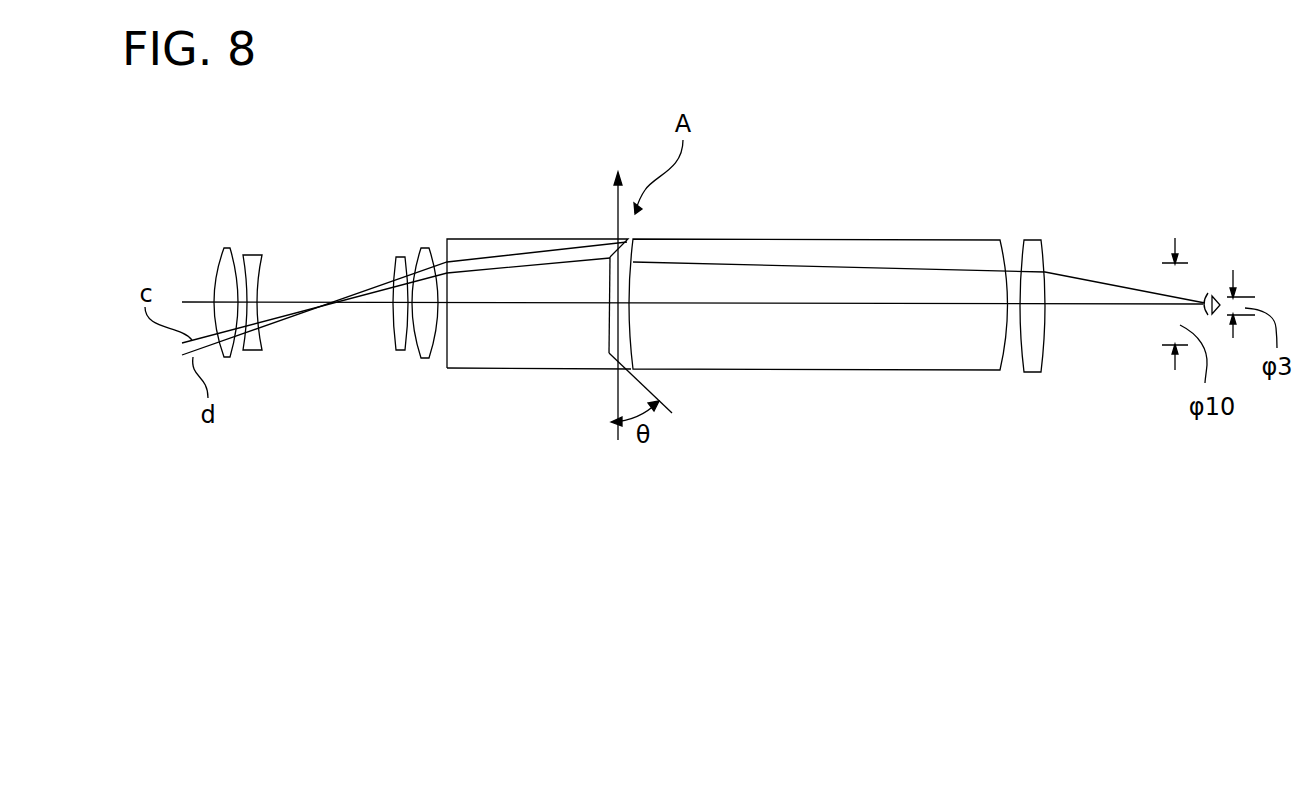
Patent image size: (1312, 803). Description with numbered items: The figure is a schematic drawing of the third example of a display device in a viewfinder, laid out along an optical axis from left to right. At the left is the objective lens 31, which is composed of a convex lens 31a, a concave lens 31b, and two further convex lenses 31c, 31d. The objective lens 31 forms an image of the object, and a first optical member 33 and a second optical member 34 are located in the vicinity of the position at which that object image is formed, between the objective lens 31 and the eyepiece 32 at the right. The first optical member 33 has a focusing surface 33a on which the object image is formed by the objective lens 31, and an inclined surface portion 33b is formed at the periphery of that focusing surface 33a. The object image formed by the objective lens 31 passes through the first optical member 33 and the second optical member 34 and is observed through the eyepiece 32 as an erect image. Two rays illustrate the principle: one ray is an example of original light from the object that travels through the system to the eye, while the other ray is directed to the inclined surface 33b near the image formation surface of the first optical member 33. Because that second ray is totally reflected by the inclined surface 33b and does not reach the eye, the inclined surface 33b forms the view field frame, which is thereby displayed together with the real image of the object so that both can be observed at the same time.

The objective lens 31 is at (285, 351).
The convex lens 31a is at (228, 247).
The concave lens 31b is at (255, 253).
The convex lens 31c is at (397, 255).
The convex lens 31d is at (422, 248).
The eyepiece 32 is at (1032, 240).
The first optical member 33 is at (493, 368).
The focusing surface 33a is at (610, 328).
The inclined surface portion 33b is at (612, 358).
The second optical member 34 is at (830, 371).